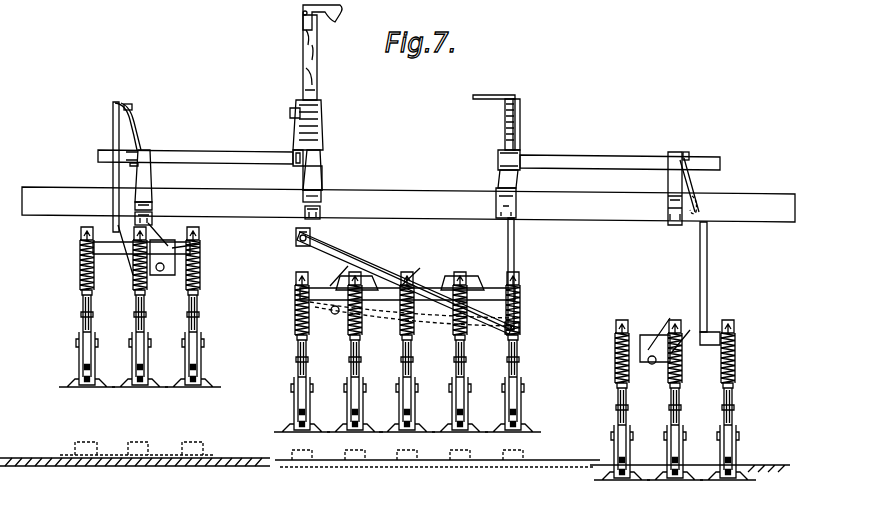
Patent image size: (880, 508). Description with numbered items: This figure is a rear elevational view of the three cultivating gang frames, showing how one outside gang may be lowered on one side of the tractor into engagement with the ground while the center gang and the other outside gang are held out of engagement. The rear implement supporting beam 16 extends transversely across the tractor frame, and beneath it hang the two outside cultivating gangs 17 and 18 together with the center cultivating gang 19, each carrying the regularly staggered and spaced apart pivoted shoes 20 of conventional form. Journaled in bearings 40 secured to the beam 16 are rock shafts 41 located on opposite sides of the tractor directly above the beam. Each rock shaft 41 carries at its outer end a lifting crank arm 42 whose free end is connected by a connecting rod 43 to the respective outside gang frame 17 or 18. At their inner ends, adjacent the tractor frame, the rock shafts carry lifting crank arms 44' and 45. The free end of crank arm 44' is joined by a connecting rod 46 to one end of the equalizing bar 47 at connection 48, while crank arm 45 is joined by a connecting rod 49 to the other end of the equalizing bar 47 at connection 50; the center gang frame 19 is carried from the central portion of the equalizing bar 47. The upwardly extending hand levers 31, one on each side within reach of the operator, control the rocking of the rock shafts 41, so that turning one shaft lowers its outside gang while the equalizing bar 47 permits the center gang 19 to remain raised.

The rear implement supporting beam 16 is at (374, 193).
The outside cultivating gang 17 is at (699, 364).
The outside cultivating gang 18 is at (127, 268).
The center cultivating gang 19 is at (421, 346).
The pivoted shoes 20 is at (128, 442).
The hand lever 31 is at (300, 17).
The bearing 40 is at (138, 130).
The rock shaft 41 is at (216, 151).
The lifting crank arm 42 is at (697, 184).
The connecting rod 43 is at (113, 172).
The lifting crank arm 44' is at (529, 158).
The lifting crank arm 45 is at (295, 135).
The connecting rod 46 is at (516, 251).
The equalizing bar 47 is at (430, 292).
The connection 48 is at (521, 326).
The connecting rod 49 is at (298, 228).
The connection 50 is at (300, 240).